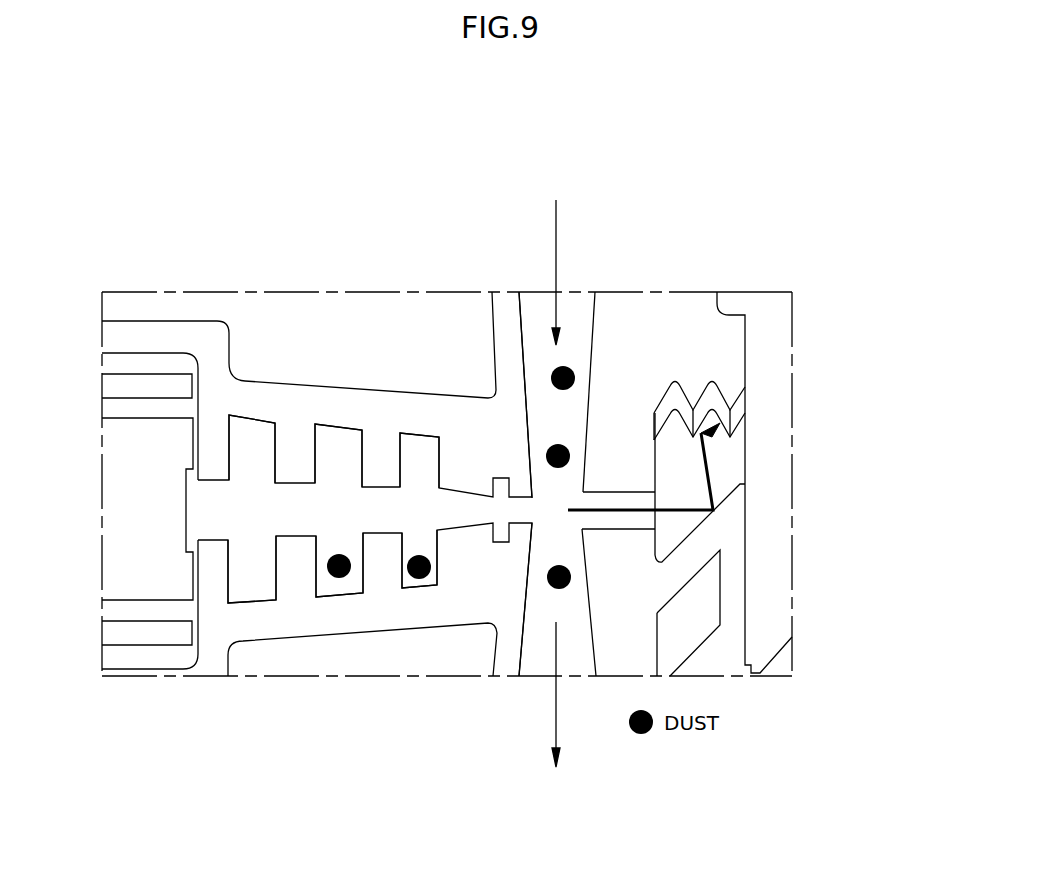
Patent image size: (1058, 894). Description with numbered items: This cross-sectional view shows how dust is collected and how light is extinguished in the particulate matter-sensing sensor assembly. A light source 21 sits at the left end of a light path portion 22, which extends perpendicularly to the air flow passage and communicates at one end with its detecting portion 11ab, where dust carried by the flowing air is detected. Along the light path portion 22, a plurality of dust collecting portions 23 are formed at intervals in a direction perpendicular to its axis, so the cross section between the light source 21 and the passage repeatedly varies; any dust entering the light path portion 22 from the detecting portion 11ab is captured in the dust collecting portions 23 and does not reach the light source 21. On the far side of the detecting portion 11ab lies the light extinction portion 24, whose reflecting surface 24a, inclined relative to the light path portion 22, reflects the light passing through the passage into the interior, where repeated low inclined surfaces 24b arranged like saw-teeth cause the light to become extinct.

The light source 21 is at (143, 497).
The light path portion 22 is at (289, 525).
The dust collecting portion 23 is at (335, 442).
The detecting portion 11ab is at (588, 413).
The light extinction portion 24 is at (760, 456).
The reflecting surface 24a is at (730, 493).
The inclined surface 24b is at (727, 413).